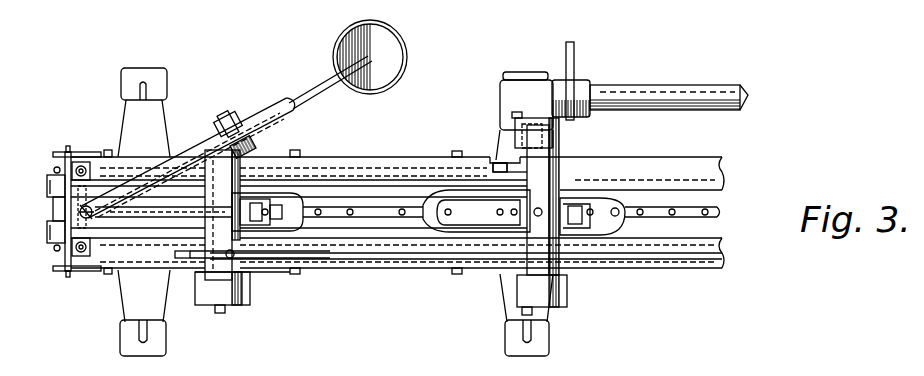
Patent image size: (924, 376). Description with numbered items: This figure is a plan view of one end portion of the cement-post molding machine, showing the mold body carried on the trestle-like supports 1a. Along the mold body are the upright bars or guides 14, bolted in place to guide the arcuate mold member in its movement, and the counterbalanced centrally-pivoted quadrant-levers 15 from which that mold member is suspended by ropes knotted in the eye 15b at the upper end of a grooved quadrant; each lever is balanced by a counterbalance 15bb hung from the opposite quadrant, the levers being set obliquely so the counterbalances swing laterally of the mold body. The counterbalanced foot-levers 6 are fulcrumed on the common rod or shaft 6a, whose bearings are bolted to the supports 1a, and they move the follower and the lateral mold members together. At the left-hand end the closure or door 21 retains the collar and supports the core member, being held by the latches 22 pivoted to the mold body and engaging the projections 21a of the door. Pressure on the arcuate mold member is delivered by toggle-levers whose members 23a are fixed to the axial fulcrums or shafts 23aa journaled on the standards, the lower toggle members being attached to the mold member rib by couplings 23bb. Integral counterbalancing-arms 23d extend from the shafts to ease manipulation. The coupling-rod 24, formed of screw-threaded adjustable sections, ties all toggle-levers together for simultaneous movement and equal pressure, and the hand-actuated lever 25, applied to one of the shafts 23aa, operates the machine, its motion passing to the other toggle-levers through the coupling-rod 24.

The trestle-like framing or supports 1a is at (515, 305).
The counterbalanced foot-levers 6 is at (566, 57).
The common rod or shaft 6a is at (632, 94).
The upright bars or guides 14 is at (72, 171).
The counterbalanced centrally-pivoted quadrant-levers 15 is at (262, 120).
The eye 15b is at (285, 106).
The counterbalance 15bb is at (396, 62).
The closure or door 21 is at (53, 213).
The projections 21a is at (64, 150).
The latches 22 is at (86, 152).
The toggle members 23a is at (175, 254).
The axial fulcrums or shafts 23aa is at (595, 290).
The couplings 23bb is at (290, 207).
The counterbalancing-arms 23d is at (490, 162).
The coupling-rod 24 is at (407, 203).
The hand-actuated lever 25 is at (400, 258).